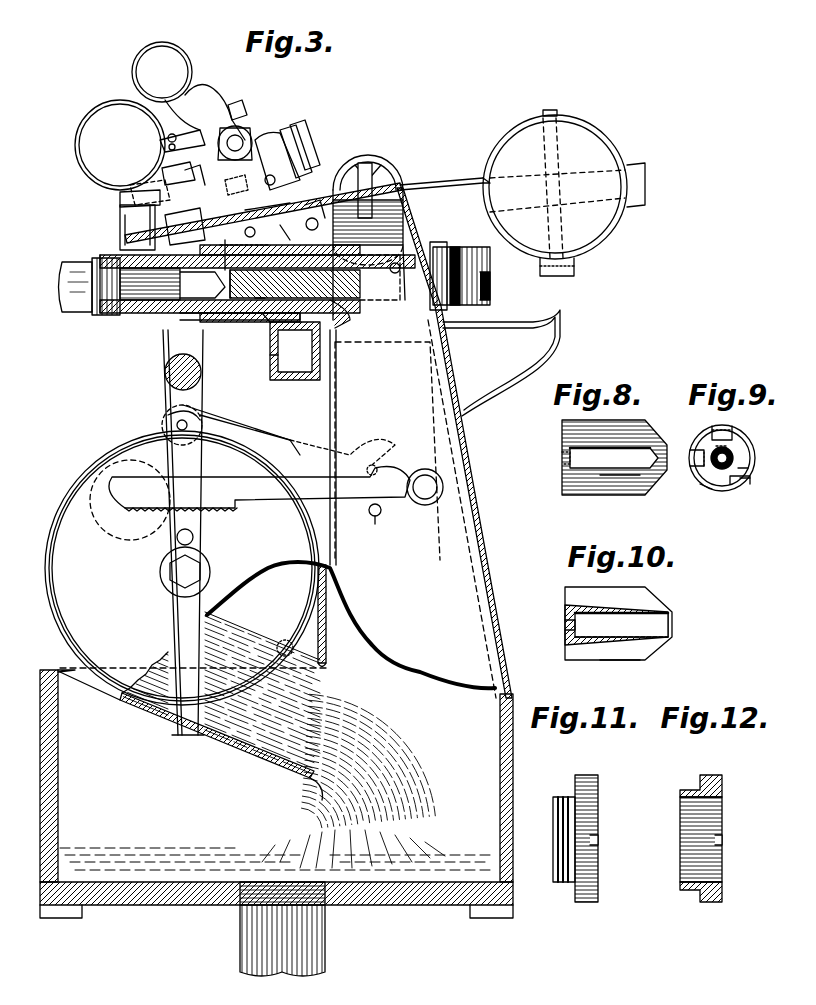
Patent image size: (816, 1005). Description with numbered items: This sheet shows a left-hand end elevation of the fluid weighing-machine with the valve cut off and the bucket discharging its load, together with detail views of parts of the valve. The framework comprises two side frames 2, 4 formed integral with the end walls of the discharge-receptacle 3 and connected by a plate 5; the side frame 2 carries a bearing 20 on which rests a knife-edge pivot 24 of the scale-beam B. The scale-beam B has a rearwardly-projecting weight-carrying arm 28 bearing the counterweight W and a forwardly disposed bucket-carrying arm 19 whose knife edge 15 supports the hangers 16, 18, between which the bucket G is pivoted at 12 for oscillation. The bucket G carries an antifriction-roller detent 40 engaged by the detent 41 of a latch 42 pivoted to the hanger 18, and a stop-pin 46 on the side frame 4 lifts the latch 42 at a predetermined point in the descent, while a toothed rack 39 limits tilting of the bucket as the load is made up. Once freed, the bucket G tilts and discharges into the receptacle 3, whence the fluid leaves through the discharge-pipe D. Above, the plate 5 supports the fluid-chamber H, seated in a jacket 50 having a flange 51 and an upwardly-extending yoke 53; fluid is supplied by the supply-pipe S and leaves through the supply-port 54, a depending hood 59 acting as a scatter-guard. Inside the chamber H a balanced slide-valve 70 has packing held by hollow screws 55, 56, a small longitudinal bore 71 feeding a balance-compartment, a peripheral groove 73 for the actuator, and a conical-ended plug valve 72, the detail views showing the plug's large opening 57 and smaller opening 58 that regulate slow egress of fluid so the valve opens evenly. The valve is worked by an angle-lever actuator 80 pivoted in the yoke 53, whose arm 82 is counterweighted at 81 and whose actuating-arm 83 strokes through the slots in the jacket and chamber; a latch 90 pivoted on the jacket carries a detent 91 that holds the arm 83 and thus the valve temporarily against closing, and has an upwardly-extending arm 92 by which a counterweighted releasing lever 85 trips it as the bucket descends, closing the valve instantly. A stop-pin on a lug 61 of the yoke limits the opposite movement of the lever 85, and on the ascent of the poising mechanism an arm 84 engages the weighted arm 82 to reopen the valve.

In FIG. 3, the side frame 2 is at (460, 570).
In FIG. 3, the discharge-receptacle 3 is at (42, 780).
In FIG. 3, the side frame 4 is at (340, 628).
In FIG. 3, the plate 5 is at (467, 492).
In FIG. 3, the pivot 12 is at (192, 572).
In FIG. 3, the knife edge 15 is at (137, 226).
In FIG. 3, the hanger 16 is at (122, 221).
In FIG. 3, the hanger 18 is at (160, 318).
In FIG. 3, the bucket-carrying arm 19 is at (342, 188).
In FIG. 3, the beam-supporting bearing 20 is at (380, 190).
In FIG. 3, the knife edge 24 is at (368, 168).
In FIG. 3, the weight-carrying arm 28 is at (452, 183).
In FIG. 3, the rack 39 is at (160, 508).
In FIG. 3, the detent 40 is at (300, 630).
In FIG. 3, the detent 41 is at (255, 462).
In FIG. 3, the latch 42 is at (242, 428).
In FIG. 3, the stop-pin 46 is at (378, 470).
In FIG. 3, the jacket 50 is at (445, 252).
In FIG. 3, the flange 51 is at (407, 307).
In FIG. 3, the yoke 53 is at (262, 210).
In FIG. 8, the yoke 53 is at (568, 455).
In FIG. 3, the supply-port 54 is at (295, 351).
In FIG. 3, the hollow screw 55 is at (158, 286).
In FIG. 3, the hollow screw 56 is at (352, 305).
In FIG. 11, the hollow screw 56 is at (598, 882).
In FIG. 12, the hollow screw 56 is at (722, 886).
In FIG. 8, the opening 57 is at (600, 470).
In FIG. 9, the opening 57 is at (712, 470).
In FIG. 10, the opening 57 is at (650, 628).
In FIG. 9, the opening 58 is at (735, 458).
In FIG. 10, the opening 58 is at (566, 625).
In FIG. 3, the hood 59 is at (275, 362).
In FIG. 3, the lug 61 is at (168, 137).
In FIG. 3, the balanced slide-valve 70 is at (233, 313).
In FIG. 3, the bore 71 is at (267, 325).
In FIG. 3, the plug valve 72 is at (239, 326).
In FIG. 8, the plug valve 72 is at (628, 476).
In FIG. 9, the plug valve 72 is at (708, 488).
In FIG. 10, the plug valve 72 is at (655, 606).
In FIG. 3, the peripheral groove 73 is at (258, 312).
In FIG. 3, the valve opening and closing actuator 80 is at (245, 135).
In FIG. 3, the counterweight 81 is at (95, 118).
In FIG. 3, the arm 82 is at (195, 132).
In FIG. 3, the actuating-arm 83 is at (271, 170).
In FIG. 3, the arm 84 is at (120, 199).
In FIG. 3, the releasing lever 85 is at (205, 88).
In FIG. 3, the latch 90 is at (302, 152).
In FIG. 3, the detent 91 is at (248, 228).
In FIG. 3, the arm 92 is at (300, 136).
In FIG. 3, the scale-beam B is at (330, 147).
In FIG. 3, the discharge-pipe D is at (325, 940).
In FIG. 3, the bucket G is at (187, 568).
In FIG. 3, the fluid-chamber H is at (257, 291).
In FIG. 3, the supply-pipe S is at (494, 286).
In FIG. 3, the counterweight W is at (564, 190).